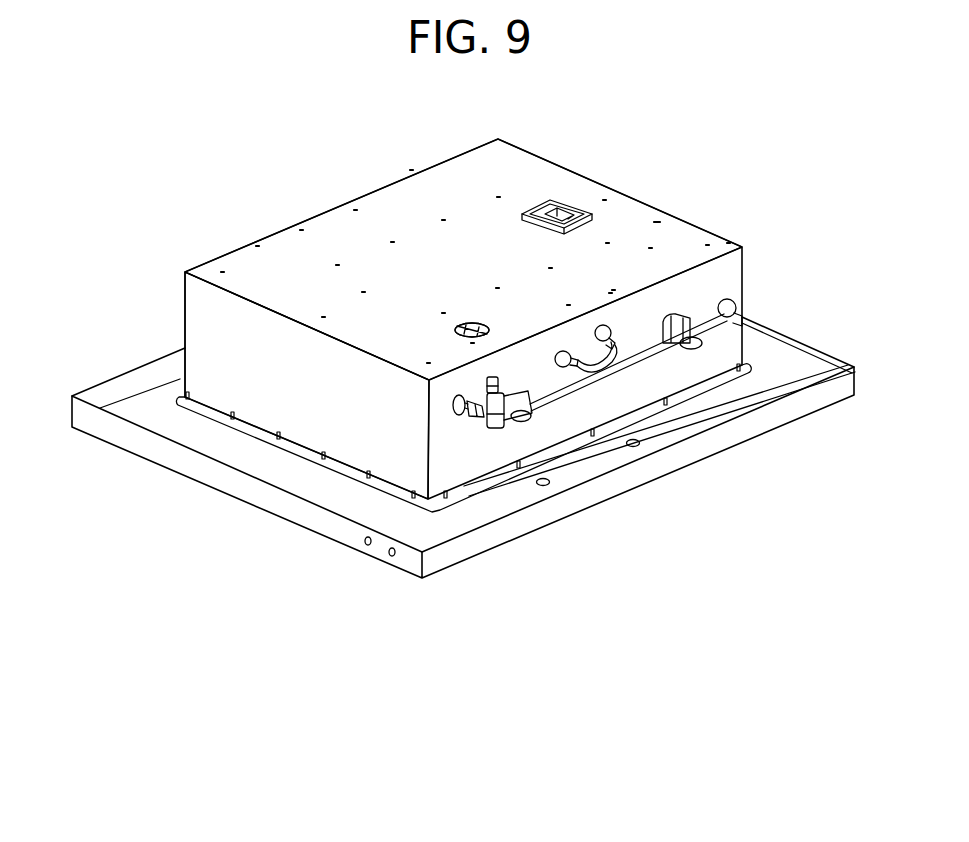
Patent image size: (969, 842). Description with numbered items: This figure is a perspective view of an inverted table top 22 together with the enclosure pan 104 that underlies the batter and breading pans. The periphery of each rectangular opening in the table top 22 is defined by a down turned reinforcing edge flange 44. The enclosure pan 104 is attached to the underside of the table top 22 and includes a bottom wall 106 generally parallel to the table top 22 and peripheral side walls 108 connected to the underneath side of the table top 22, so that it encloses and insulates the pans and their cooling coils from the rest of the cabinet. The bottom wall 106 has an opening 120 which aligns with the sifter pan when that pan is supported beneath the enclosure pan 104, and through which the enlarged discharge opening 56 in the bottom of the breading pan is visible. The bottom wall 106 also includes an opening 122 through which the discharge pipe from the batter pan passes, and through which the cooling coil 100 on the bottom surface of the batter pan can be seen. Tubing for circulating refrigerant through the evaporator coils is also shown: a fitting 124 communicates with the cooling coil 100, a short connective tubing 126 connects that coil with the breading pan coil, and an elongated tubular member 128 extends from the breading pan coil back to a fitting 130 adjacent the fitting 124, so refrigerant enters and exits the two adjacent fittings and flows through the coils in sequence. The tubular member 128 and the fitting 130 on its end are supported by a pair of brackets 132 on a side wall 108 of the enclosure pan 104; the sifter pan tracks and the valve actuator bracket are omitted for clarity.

The table top 22 is at (340, 545).
The down turned reinforcing edge flange 44 is at (212, 476).
The enlarged discharge opening 56 is at (578, 215).
The cooling coil 100 is at (467, 326).
The enclosure pan 104 is at (181, 314).
The bottom wall 106 is at (315, 226).
The peripheral side walls 108 is at (204, 330).
The opening 120 is at (546, 207).
The opening 122 is at (466, 320).
The fitting 124 is at (463, 416).
The short connective tubing 126 is at (610, 363).
The elongated tubular member 128 is at (573, 385).
The fitting 130 is at (503, 377).
The brackets 132 is at (683, 320).